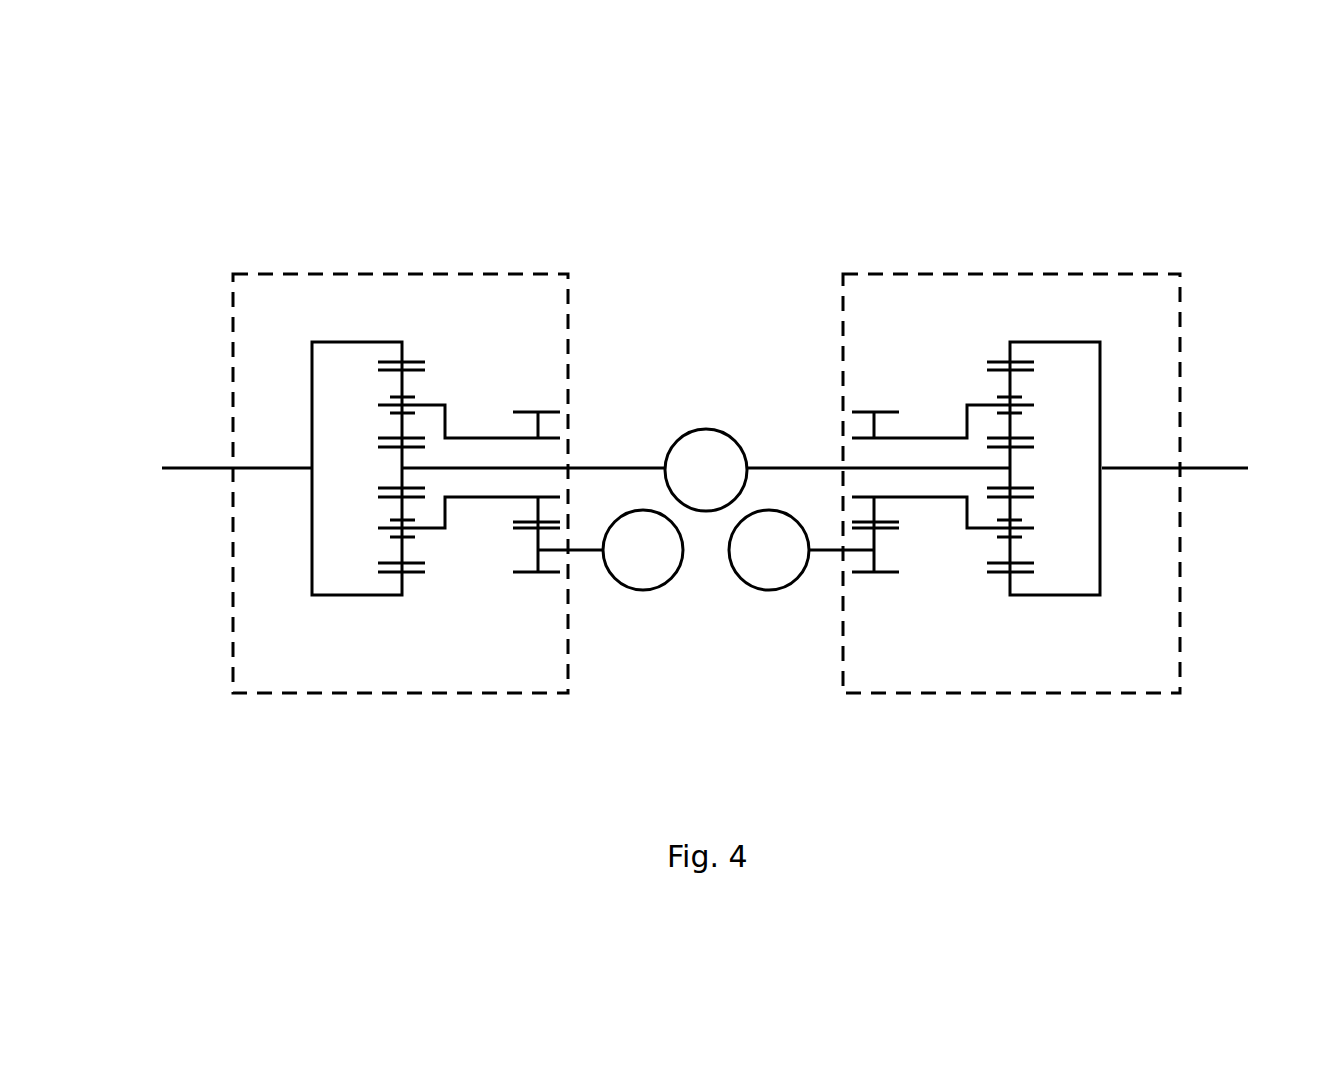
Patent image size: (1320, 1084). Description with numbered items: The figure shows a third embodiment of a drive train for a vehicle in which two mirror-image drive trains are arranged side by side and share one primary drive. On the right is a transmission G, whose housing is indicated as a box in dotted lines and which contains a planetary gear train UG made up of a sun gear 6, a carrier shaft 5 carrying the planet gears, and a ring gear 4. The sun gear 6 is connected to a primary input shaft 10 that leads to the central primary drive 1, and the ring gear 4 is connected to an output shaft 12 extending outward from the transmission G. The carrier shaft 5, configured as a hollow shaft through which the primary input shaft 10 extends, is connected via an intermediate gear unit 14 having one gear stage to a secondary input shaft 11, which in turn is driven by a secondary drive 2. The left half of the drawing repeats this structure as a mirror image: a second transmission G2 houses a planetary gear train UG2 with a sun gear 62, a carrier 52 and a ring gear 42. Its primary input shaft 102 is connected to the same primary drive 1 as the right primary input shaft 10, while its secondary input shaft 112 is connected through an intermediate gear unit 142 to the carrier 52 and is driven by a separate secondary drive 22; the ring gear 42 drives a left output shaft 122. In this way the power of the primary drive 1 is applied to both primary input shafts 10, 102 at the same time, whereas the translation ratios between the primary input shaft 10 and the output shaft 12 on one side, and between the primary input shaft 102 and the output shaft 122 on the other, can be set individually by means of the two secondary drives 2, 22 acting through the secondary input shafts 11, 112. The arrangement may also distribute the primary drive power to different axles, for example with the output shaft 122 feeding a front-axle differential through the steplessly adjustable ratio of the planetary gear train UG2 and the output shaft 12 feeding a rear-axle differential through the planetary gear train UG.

The primary drive 1 is at (723, 430).
The secondary drive 2 is at (743, 588).
The secondary drive 22 is at (667, 588).
The ring gear 4 is at (1102, 380).
The ring gear 42 is at (312, 381).
The carrier shaft 5 is at (967, 530).
The carrier 52 is at (445, 530).
The sun gear 6 is at (1010, 466).
The sun gear 62 is at (402, 468).
The primary input shaft 10 is at (825, 468).
The primary input shaft 102 is at (587, 468).
The secondary input shaft 11 is at (813, 560).
The secondary input shaft 112 is at (600, 560).
The output shaft 12 is at (1208, 472).
The output shaft 122 is at (204, 470).
The intermediate gear unit 14 is at (883, 605).
The intermediate gear unit 142 is at (508, 597).
The transmission G is at (1095, 693).
The second transmission G2 is at (318, 693).
The planetary gear train UG is at (1079, 318).
The planetary gear train UG2 is at (333, 318).